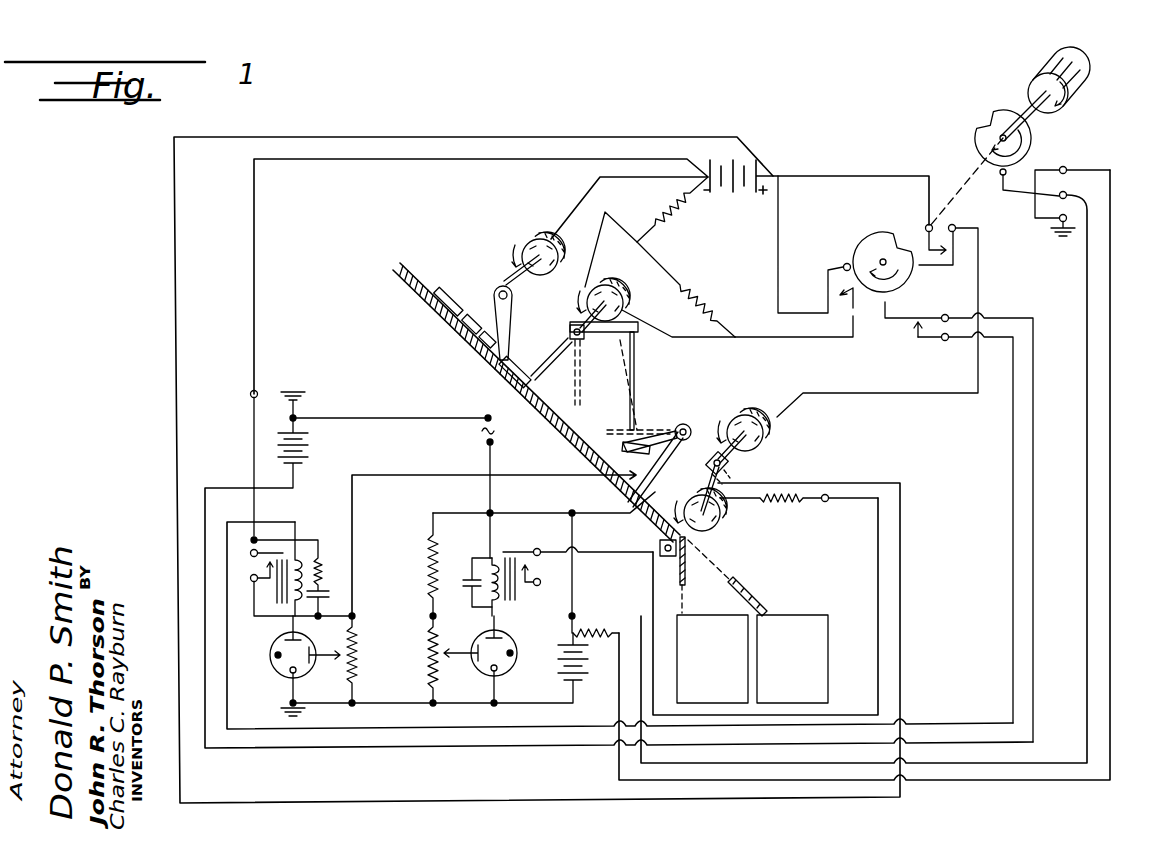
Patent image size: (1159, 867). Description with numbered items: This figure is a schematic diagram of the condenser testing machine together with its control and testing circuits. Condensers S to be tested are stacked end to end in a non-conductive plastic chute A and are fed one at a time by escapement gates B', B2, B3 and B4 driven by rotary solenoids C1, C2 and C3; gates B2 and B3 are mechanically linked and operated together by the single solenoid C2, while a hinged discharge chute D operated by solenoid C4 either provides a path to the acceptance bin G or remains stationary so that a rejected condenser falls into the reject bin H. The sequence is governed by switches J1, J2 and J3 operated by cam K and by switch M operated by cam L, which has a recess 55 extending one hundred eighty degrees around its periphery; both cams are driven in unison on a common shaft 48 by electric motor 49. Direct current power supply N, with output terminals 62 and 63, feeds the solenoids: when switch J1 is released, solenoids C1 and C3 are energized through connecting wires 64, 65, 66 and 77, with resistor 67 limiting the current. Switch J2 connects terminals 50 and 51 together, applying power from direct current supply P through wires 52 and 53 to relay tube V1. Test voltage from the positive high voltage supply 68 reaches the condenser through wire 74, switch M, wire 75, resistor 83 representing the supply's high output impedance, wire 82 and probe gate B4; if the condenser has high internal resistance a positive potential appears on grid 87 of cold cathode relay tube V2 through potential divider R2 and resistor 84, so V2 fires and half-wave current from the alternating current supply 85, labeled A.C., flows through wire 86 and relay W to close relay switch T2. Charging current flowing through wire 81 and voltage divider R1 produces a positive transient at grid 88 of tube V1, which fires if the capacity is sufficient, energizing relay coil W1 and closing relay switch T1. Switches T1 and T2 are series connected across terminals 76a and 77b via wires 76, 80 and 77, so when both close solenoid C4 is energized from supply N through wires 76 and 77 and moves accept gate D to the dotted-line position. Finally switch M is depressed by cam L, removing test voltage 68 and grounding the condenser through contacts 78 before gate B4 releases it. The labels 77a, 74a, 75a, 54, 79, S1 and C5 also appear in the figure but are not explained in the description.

The connecting wire 76 is at (378, 136).
The connecting wire 77 is at (364, 162).
The terminal 76a is at (250, 394).
The conductor 77a is at (876, 564).
The terminal 77b is at (826, 508).
The direct current power supply N is at (750, 193).
The output terminal 62 is at (706, 196).
The output terminal 63 is at (777, 172).
The connecting wire 64 is at (900, 398).
The connecting wire 65 is at (850, 175).
The connecting wire 66 is at (722, 332).
The resistor 67 is at (690, 290).
The test voltage supply 68 is at (584, 678).
The common shaft 48 is at (952, 192).
The electric motor 49 is at (1078, 72).
The terminal 50 is at (945, 314).
The terminal 51 is at (946, 341).
The connecting wire 52 is at (230, 522).
The connecting wire 53 is at (214, 488).
The cam 54 is at (889, 237).
The recess 55 is at (975, 122).
The wire 74 is at (1112, 549).
The contact 74a is at (1068, 166).
The wire 75 is at (1086, 548).
The contact 75a is at (1090, 208).
The contacts 78 is at (1030, 208).
The resistor 79 is at (775, 508).
The connecting wire 80 is at (396, 703).
The external electrical connection 81 is at (559, 479).
The connecting wire 82 is at (600, 521).
The resistor 83 is at (573, 633).
The resistor 84 is at (440, 560).
The alternating current supply 85 is at (482, 437).
The wire 86 is at (497, 505).
The grid 87 is at (470, 652).
The grid 88 is at (322, 652).
The chute A is at (560, 433).
The alternating current source A.C. is at (519, 426).
The condenser S is at (452, 292).
The switch S1 is at (522, 367).
The escapement gate B' is at (517, 323).
The escapement gate B2 is at (569, 363).
The escapement gate B3 is at (645, 468).
The escapement gate B4 is at (700, 474).
The rotary solenoid C1 is at (552, 242).
The rotary solenoid C2 is at (624, 305).
The rotary solenoid C3 is at (790, 400).
The rotary solenoid C4 is at (730, 492).
The capacitor C5 is at (462, 584).
The hinged discharge chute D is at (690, 573).
The acceptance hopper G is at (830, 672).
The reject bin H is at (690, 703).
The switch J1 is at (940, 235).
The switch J2 is at (915, 333).
The switch J3 is at (830, 273).
The cam K is at (905, 292).
The cam L is at (1031, 137).
The switch M is at (1037, 202).
The direct current power supply P is at (310, 454).
The voltage divider R1 is at (357, 664).
The potential divider R2 is at (428, 661).
The relay switch T1 is at (262, 565).
The relay switch T2 is at (530, 571).
The cold cathode relay tube V1 is at (280, 660).
The cold cathode relay tube V2 is at (510, 670).
The relay W is at (500, 600).
The relay coil W1 is at (302, 542).